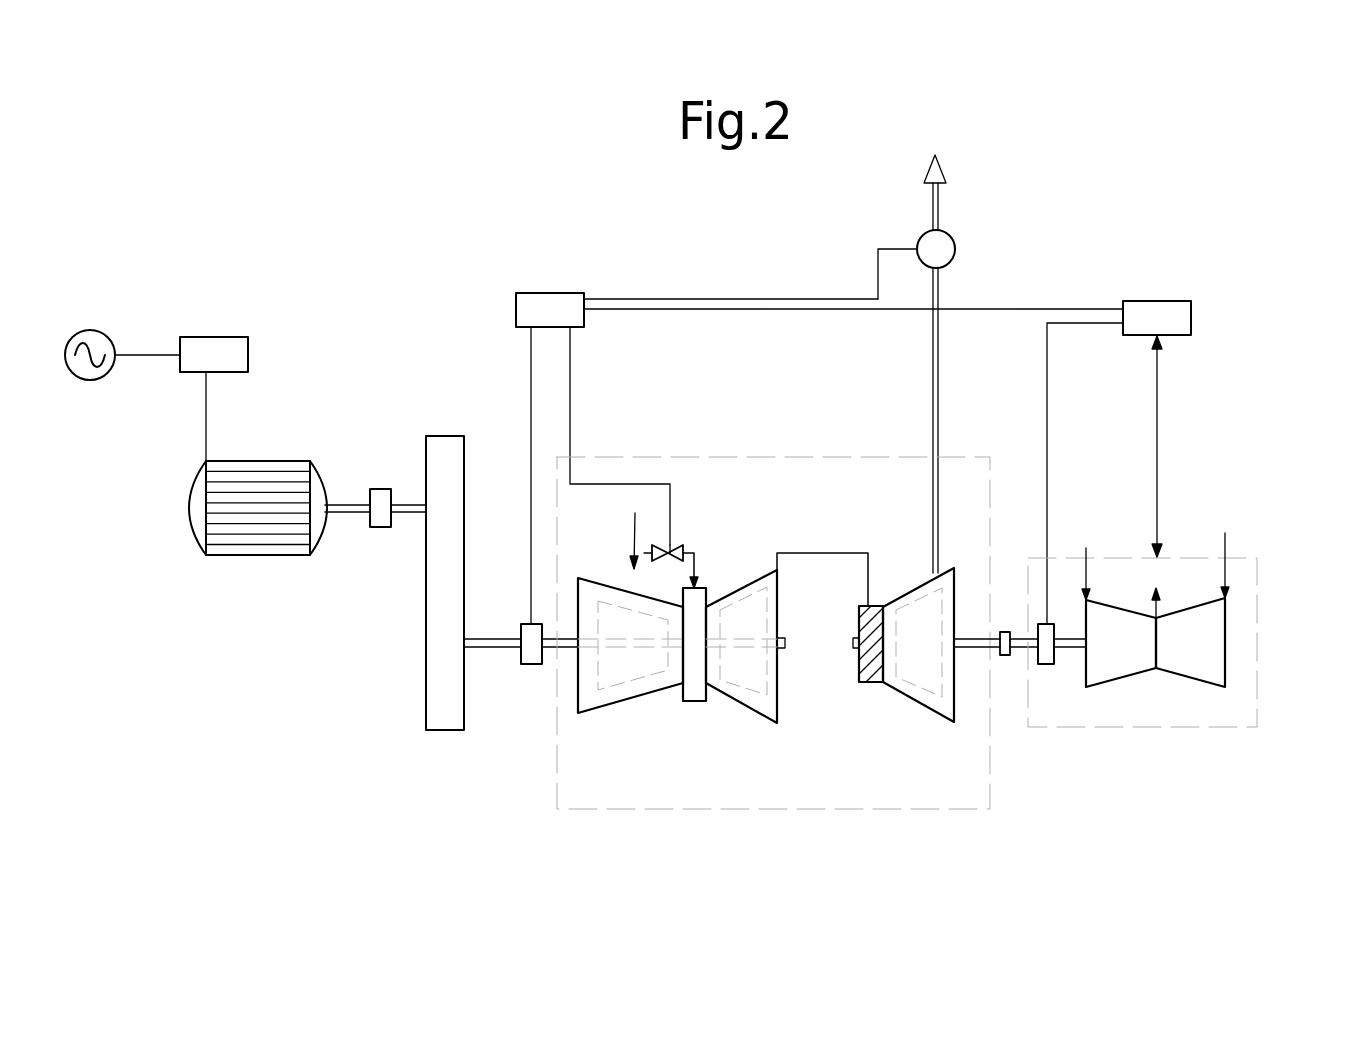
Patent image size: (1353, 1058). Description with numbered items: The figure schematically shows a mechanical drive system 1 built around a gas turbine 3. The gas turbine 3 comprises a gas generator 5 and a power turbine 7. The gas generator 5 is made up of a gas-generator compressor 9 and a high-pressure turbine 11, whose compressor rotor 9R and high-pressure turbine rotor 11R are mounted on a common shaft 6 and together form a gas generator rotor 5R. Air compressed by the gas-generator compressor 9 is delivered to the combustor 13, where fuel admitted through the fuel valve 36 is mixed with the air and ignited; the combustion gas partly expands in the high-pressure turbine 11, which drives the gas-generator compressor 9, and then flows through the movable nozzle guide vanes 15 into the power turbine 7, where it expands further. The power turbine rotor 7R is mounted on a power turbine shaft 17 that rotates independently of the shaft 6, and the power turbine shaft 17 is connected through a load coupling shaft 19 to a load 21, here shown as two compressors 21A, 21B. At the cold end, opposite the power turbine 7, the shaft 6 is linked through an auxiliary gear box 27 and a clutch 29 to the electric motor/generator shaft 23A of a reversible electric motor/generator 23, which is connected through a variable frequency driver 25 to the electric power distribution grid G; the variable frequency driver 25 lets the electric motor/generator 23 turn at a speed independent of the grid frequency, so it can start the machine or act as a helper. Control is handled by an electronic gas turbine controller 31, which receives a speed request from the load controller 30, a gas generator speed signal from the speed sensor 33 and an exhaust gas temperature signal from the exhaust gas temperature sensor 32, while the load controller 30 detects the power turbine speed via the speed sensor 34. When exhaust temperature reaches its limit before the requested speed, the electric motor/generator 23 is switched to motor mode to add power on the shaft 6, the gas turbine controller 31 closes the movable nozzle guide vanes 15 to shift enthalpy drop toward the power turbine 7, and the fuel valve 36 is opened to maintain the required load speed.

The electric power distribution grid G is at (100, 330).
The variable frequency driver 25 is at (219, 335).
The electric motor/generator 23 is at (252, 537).
The electric motor/generator shaft 23A is at (350, 507).
The clutch 29 is at (383, 520).
The auxiliary gear box 27 is at (425, 696).
The speed sensor 33 is at (528, 648).
The electronic gas turbine controller 31 is at (528, 312).
The exhaust gas temperature sensor 32 is at (926, 244).
The load controller 30 is at (1153, 313).
The gas turbine 3 is at (776, 448).
The gas-generator compressor 9 is at (625, 694).
The gas generator rotor 5R is at (618, 700).
The compressor rotor 9R is at (670, 675).
The shaft 6 is at (568, 633).
The gas generator 5 is at (633, 528).
The fuel valve 36 is at (675, 550).
The combustor 13 is at (693, 700).
The high-pressure turbine 11 is at (787, 645).
The high-pressure turbine rotor 11R is at (745, 690).
The movable nozzle guide vanes 15 is at (870, 700).
The power turbine 7 is at (932, 645).
The power turbine rotor 7R is at (923, 705).
The power turbine shaft 17 is at (969, 630).
The speed sensor 34 is at (1045, 657).
The load coupling shaft 19 is at (1065, 630).
The load 21 is at (1190, 619).
The compressor 21A is at (1118, 682).
The compressor 21B is at (1197, 672).
The mechanical drive system 1 is at (1190, 562).